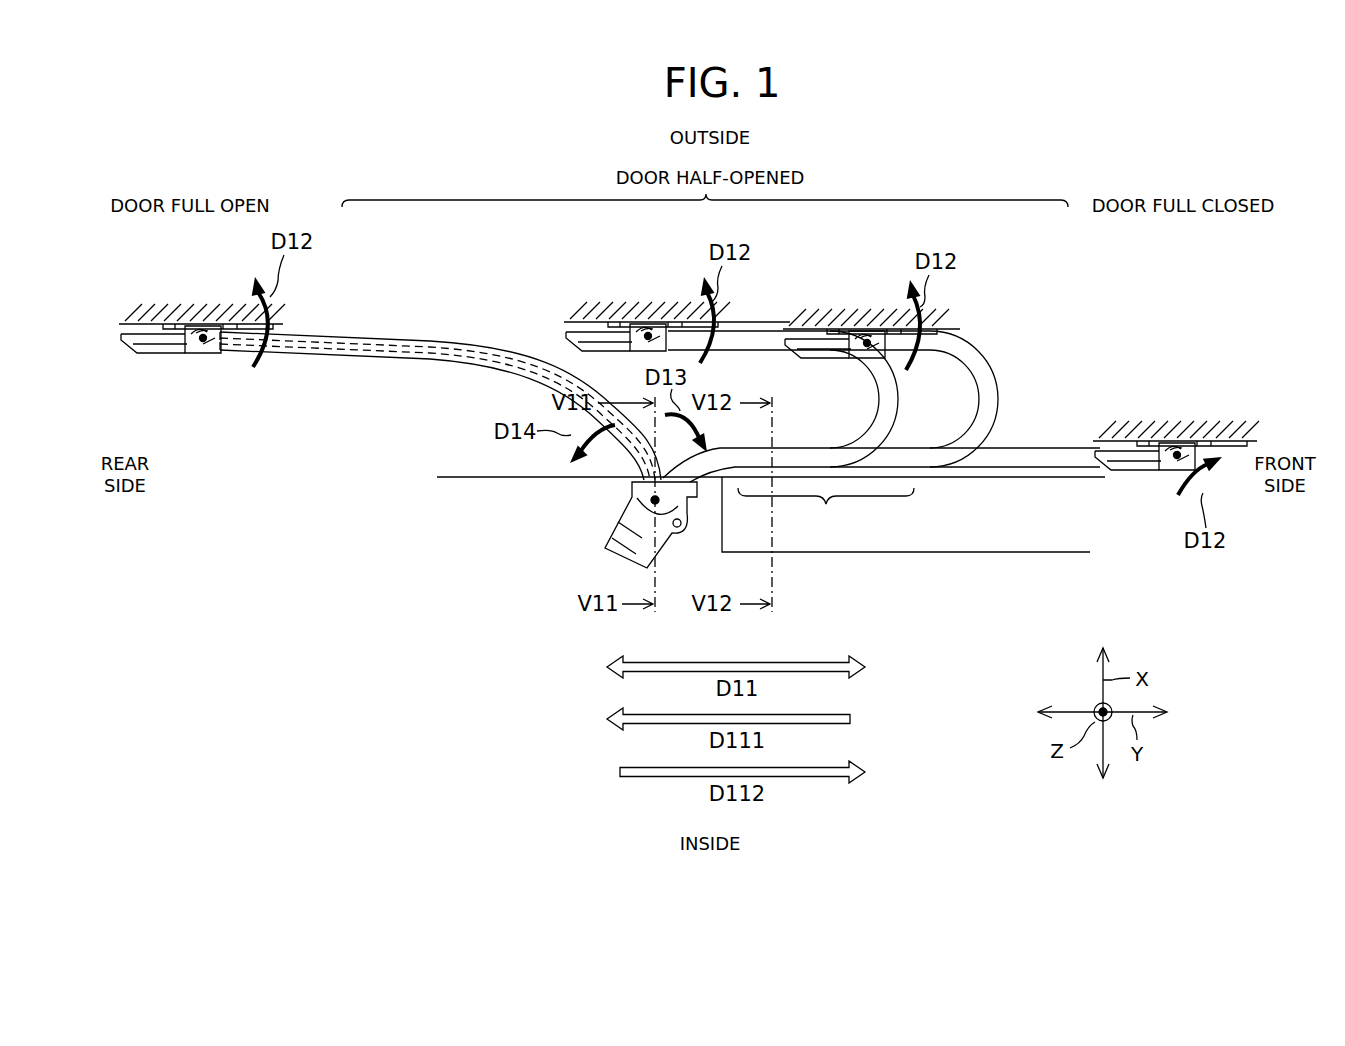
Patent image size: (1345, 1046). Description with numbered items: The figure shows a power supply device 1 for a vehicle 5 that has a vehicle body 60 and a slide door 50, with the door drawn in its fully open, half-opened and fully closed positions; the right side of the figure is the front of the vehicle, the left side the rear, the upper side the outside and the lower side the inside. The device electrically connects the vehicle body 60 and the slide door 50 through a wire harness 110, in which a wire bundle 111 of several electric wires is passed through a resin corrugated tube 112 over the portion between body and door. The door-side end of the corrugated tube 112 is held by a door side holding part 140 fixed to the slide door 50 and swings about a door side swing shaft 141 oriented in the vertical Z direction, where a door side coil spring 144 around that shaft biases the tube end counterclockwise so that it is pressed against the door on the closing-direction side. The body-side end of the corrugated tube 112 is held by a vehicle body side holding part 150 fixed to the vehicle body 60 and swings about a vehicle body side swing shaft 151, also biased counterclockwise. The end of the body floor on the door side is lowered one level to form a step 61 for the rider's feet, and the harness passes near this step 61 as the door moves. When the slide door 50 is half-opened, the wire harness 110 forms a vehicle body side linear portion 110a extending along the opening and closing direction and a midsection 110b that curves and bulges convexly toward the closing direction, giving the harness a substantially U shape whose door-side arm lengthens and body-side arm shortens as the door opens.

The power supply device 1 is at (258, 500).
The vehicle 5 is at (398, 560).
The slide door 50 is at (130, 325).
The vehicle body 60 is at (468, 476).
The step 61 is at (1074, 497).
The wire harness 110 is at (388, 340).
The vehicle body side linear portion 110a is at (826, 504).
The midsection 110b is at (997, 400).
The wire bundle 111 is at (396, 355).
The corrugated tube 112 is at (338, 358).
The door side holding part 140 is at (165, 354).
The door side swing shaft 141 is at (204, 326).
The door side coil spring 144 is at (208, 326).
The vehicle body side holding part 150 is at (615, 532).
The vehicle body side swing shaft 151 is at (652, 500).